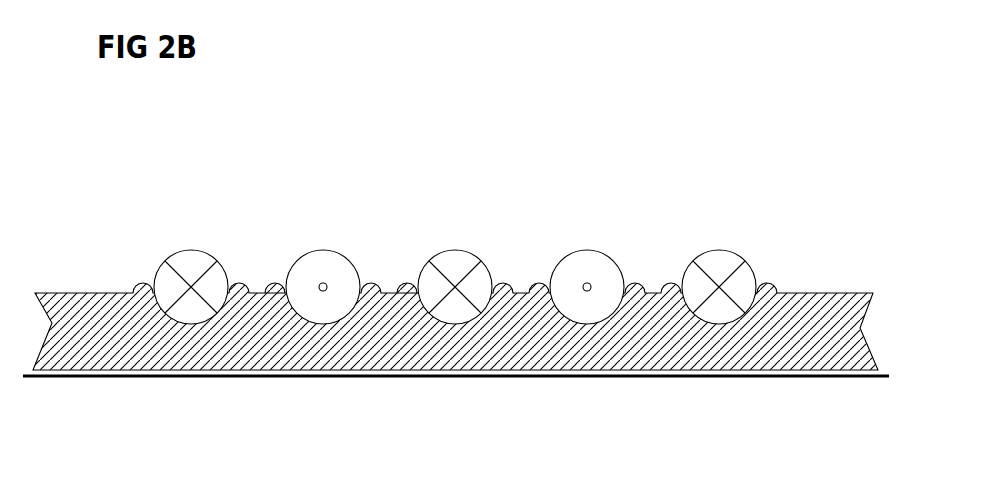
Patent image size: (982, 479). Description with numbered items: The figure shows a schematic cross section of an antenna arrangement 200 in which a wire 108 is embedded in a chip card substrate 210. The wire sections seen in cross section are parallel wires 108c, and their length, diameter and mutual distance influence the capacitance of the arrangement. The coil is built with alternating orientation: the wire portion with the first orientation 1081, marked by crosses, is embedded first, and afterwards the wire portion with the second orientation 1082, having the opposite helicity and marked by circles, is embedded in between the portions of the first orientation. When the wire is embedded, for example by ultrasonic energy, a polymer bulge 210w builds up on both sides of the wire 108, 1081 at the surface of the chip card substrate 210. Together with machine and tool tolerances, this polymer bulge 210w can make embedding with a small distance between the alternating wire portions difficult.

The electronic assembly / substrate structure 200 is at (459, 271).
The chip card substrate 210 is at (456, 364).
The polymer bulge 210w is at (412, 291).
The wire 108 is at (481, 213).
The parallel wires 108c is at (481, 213).
The wire portion with the first orientation 1081 is at (740, 163).
The wire portion with the second orientation 1082 is at (455, 256).